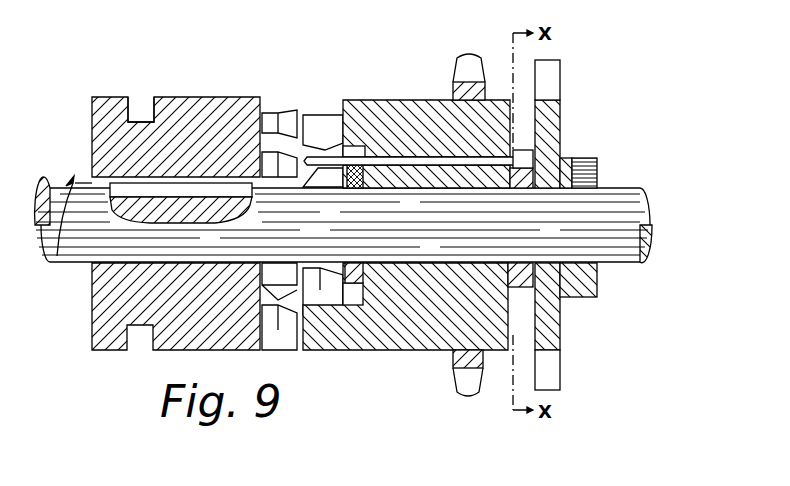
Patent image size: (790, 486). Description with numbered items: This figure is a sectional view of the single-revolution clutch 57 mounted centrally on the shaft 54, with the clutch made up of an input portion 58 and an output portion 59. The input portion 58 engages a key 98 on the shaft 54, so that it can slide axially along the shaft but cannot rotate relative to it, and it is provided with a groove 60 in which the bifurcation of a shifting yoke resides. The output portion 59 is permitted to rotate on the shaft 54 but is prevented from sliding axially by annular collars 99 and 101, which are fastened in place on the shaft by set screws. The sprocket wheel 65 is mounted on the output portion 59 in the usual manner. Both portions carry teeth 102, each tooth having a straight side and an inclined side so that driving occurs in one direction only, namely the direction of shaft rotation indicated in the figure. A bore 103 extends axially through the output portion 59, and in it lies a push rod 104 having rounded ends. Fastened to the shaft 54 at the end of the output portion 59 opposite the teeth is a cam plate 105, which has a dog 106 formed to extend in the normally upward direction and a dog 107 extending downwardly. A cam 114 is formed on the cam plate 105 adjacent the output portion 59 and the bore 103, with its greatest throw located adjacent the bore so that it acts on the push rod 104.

The shaft 54 is at (56, 256).
The single-revolution clutch 57 is at (98, 334).
The input portion 58 is at (210, 103).
The output portion 59 is at (385, 107).
The groove 60 is at (150, 118).
The sprocket wheel 65 is at (468, 58).
The key 98 is at (131, 185).
The annular collar 99 is at (362, 276).
The annular collar 101 is at (510, 281).
The teeth 102 is at (320, 120).
The bore 103 is at (405, 156).
The push rod 104 is at (490, 160).
The cam plate 105 is at (553, 118).
The dog 106 is at (555, 78).
The dog 107 is at (548, 373).
The cam 114 is at (527, 162).